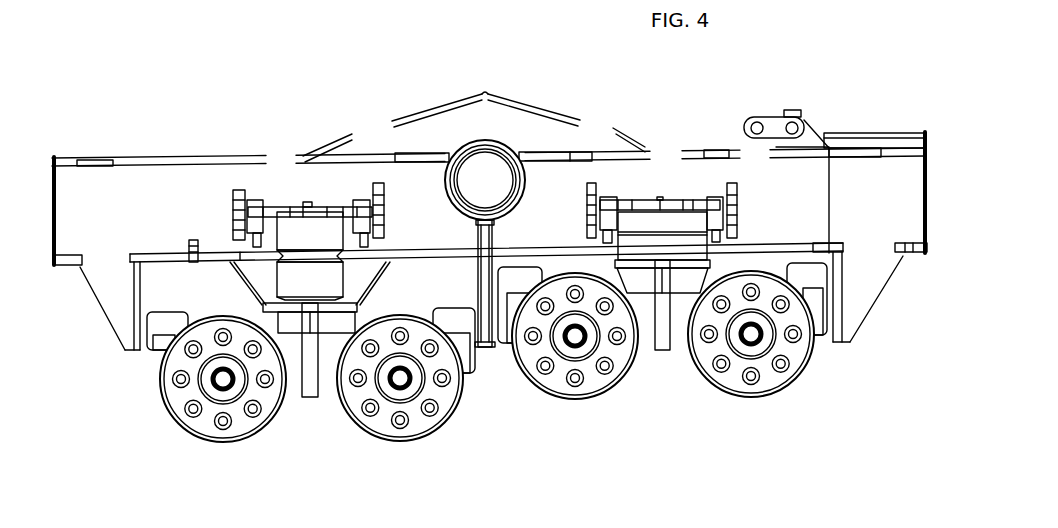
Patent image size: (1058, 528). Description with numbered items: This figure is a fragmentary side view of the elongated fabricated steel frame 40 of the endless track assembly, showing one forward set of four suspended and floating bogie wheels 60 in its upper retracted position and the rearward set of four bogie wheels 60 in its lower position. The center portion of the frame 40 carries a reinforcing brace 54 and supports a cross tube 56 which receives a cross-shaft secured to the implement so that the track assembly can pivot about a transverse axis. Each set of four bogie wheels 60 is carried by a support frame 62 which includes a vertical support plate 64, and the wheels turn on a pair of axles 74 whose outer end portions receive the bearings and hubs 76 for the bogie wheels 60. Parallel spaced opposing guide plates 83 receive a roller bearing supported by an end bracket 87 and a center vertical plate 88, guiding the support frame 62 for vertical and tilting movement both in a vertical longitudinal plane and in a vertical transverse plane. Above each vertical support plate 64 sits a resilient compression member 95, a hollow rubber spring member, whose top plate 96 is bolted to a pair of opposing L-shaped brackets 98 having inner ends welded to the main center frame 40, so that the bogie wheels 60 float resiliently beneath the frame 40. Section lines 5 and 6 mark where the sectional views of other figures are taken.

The section line 5- 5 is at (489, 327).
The section line 6- 6 is at (64, 268).
The frame 40 is at (233, 140).
The reinforcing brace 54 is at (524, 100).
The cross tube 56 is at (472, 145).
The bogie wheels 60 is at (183, 396).
The support frame 62 is at (297, 413).
The vertical support plate 64 is at (313, 387).
The axles 74 is at (222, 381).
The bearings and hubs 76 is at (235, 392).
The guide plates 83 is at (812, 277).
The end bracket 87 is at (117, 263).
The center vertical plate 88 is at (488, 281).
The resilient compression member 95 is at (317, 233).
The top plate 96 is at (280, 210).
The L-shaped brackets 98 is at (240, 205).